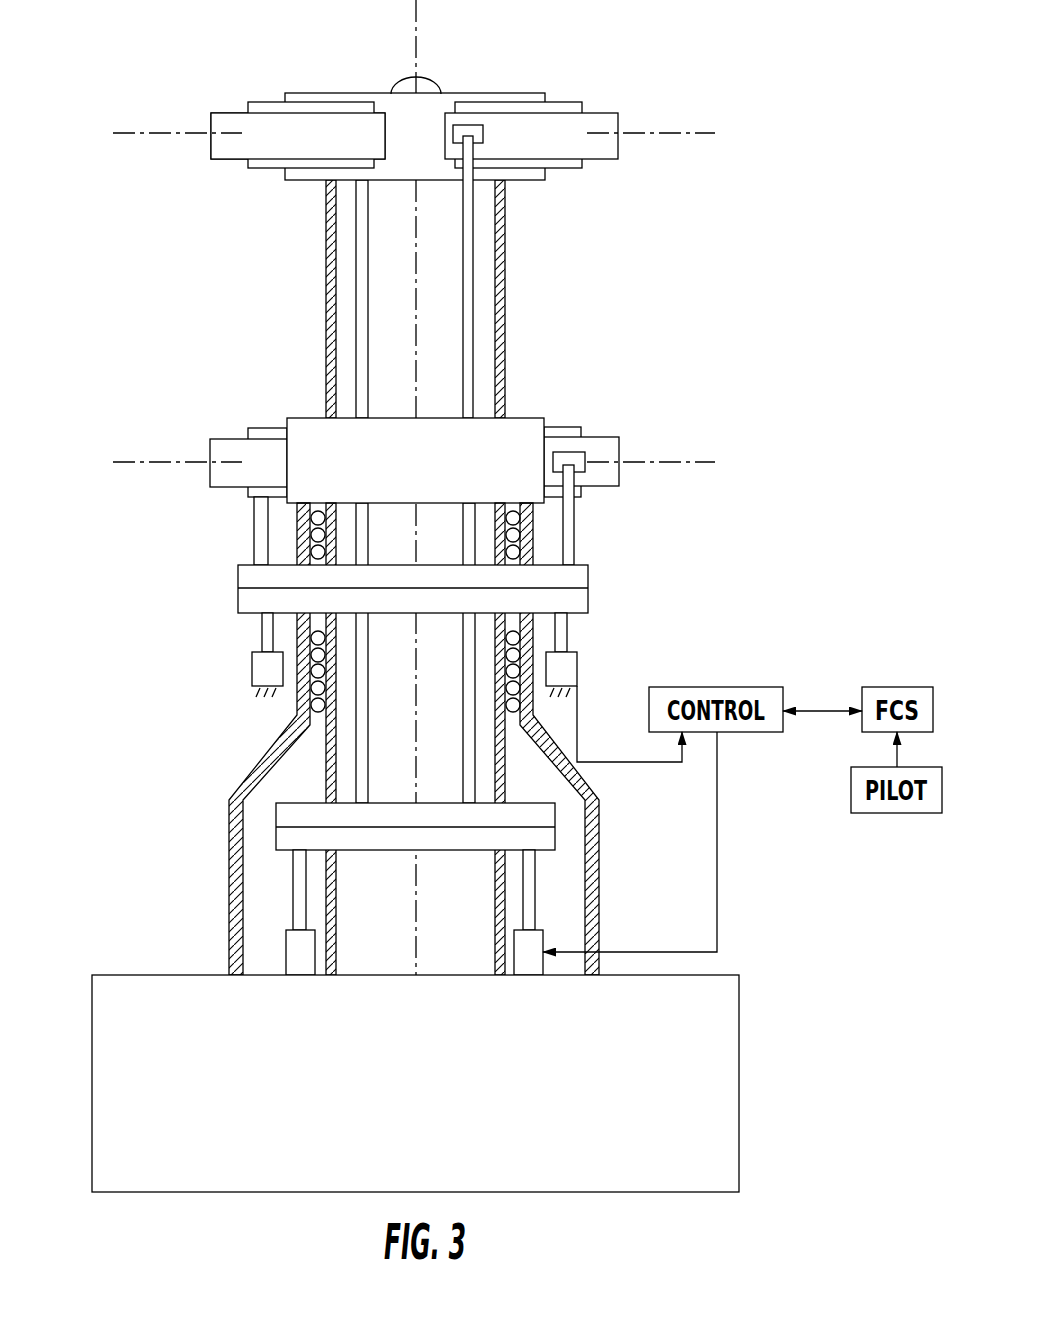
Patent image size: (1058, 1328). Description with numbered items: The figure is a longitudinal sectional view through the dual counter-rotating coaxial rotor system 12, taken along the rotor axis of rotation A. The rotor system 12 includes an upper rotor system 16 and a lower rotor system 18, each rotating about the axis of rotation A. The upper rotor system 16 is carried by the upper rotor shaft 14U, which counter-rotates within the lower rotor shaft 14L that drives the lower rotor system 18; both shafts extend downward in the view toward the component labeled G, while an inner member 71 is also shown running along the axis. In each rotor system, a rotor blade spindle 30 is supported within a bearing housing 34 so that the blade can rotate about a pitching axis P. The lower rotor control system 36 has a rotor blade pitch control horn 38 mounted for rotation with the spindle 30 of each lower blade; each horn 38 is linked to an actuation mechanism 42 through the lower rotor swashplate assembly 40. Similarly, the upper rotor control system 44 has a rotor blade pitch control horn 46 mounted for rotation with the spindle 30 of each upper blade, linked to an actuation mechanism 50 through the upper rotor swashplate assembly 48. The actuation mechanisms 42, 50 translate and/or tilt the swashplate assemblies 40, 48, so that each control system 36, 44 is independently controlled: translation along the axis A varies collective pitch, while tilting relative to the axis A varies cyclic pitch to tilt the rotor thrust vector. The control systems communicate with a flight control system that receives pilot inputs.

The axis of rotation A is at (416, 37).
The pitching axis P is at (652, 135).
The dual counter-rotating coaxial rotor system 12 is at (600, 315).
The upper rotor shaft 14U is at (502, 291).
The lower rotor shaft 14L is at (596, 820).
The upper rotor system 16 is at (628, 120).
The lower rotor system 18 is at (628, 447).
The rotor blade spindle 30 is at (561, 125).
The bearing housing 34 is at (317, 113).
The lower rotor control system 36 is at (608, 582).
The rotor blade pitch control horn 38 is at (580, 461).
The lower rotor swashplate assembly 40 is at (583, 601).
The actuation mechanism 42 is at (247, 636).
The upper rotor control system 44 is at (216, 829).
The rotor blade pitch control horn 46 is at (470, 135).
The upper rotor swashplate assembly 48 is at (290, 840).
The actuation mechanism 50 is at (550, 887).
The inner shaft 71 is at (363, 738).
The gearbox G is at (92, 1048).